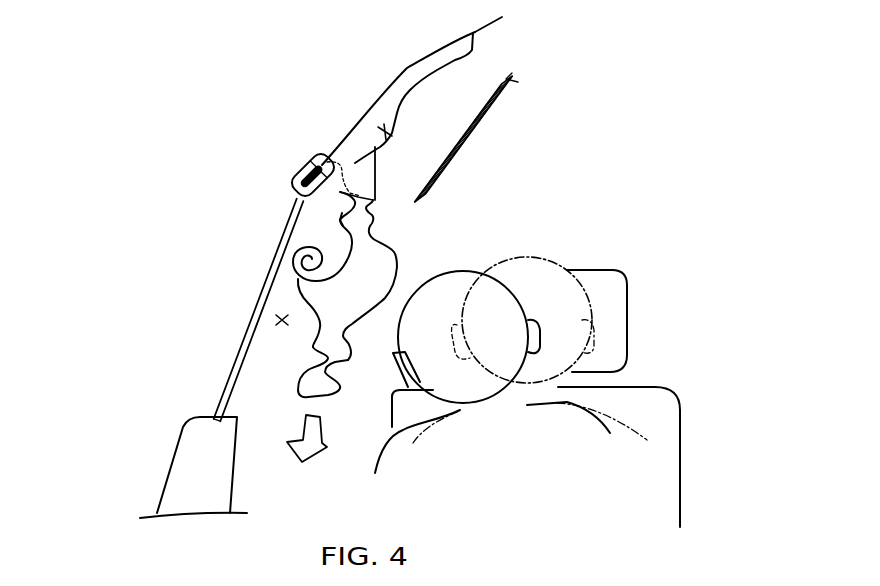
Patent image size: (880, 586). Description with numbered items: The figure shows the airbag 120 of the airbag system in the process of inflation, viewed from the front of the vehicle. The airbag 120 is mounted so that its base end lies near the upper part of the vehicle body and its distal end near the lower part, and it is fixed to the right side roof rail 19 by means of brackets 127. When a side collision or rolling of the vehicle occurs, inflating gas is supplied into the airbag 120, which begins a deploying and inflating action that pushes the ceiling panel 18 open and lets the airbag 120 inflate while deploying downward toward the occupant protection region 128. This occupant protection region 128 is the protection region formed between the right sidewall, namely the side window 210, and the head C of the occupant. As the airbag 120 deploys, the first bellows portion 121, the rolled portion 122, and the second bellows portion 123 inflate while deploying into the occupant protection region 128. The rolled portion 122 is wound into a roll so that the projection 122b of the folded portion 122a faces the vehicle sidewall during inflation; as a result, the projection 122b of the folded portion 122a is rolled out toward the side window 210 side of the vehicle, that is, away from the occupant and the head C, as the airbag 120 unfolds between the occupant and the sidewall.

The right side roof rail 19 is at (398, 63).
The bracket 127 is at (360, 158).
The ceiling panel 18 is at (500, 107).
The airbag 120 is at (401, 248).
The first bellows portion 121 is at (325, 218).
The rolled portion 122 is at (231, 214).
The folded portion 122a is at (313, 252).
The projection 122b is at (300, 266).
The occupant protection region 128 is at (277, 320).
The second bellows portion 123 is at (297, 376).
The side window 210 is at (240, 343).
The head of the occupant C is at (475, 259).